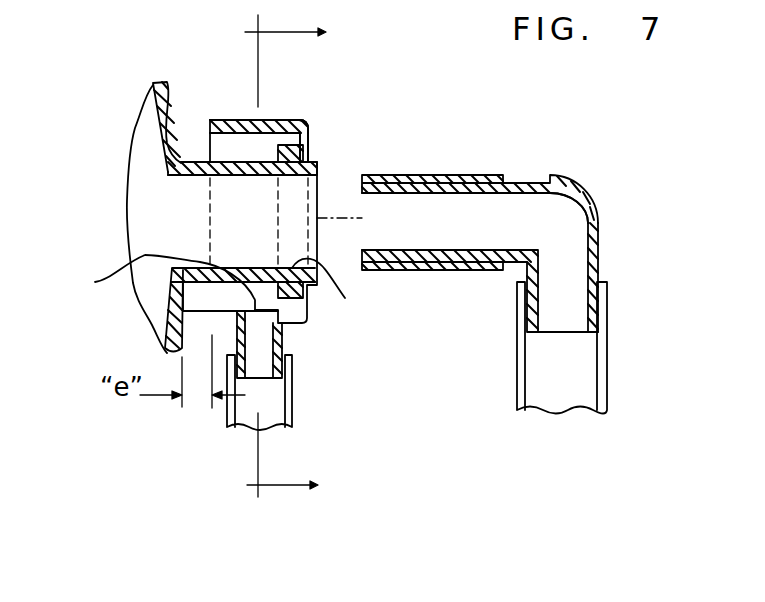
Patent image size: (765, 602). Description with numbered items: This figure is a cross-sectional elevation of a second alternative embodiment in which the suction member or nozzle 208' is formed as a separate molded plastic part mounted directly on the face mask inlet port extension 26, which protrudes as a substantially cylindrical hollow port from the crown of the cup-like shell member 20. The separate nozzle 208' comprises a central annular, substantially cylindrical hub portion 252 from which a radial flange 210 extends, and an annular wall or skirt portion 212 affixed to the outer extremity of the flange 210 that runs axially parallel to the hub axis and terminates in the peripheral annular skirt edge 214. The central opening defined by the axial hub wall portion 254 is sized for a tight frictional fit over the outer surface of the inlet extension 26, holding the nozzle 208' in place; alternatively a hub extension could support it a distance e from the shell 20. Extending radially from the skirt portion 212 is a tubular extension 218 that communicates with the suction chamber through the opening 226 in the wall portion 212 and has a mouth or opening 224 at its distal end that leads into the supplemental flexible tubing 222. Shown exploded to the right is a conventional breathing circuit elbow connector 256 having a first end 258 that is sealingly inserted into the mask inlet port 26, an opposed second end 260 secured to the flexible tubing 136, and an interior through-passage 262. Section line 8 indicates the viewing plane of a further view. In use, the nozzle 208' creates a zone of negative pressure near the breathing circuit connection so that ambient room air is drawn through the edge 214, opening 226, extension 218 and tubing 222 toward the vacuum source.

The shell member 20 is at (173, 83).
The face mask inlet port extension 26 is at (188, 162).
The section line 8 is at (277, 252).
The hub portion 252 is at (277, 153).
The wall or skirt portion 212 is at (268, 118).
The suction nozzle 208' is at (366, 102).
The radial flange 210 is at (306, 145).
The first end of elbow connector 258 is at (440, 175).
The breathing circuit elbow connector 256 is at (585, 176).
The interior through-passage 262 is at (547, 215).
The second end of elbow connector 260 is at (580, 278).
The flexible tubing 136 is at (605, 364).
The opening in wall portion 226 is at (95, 282).
The annular skirt edge 214 is at (175, 308).
The axial hub wall portion 254 is at (345, 298).
The tubular extension 218 is at (286, 338).
The supplemental flexible tubing 222 is at (292, 402).
The mouth or opening 224 is at (275, 382).